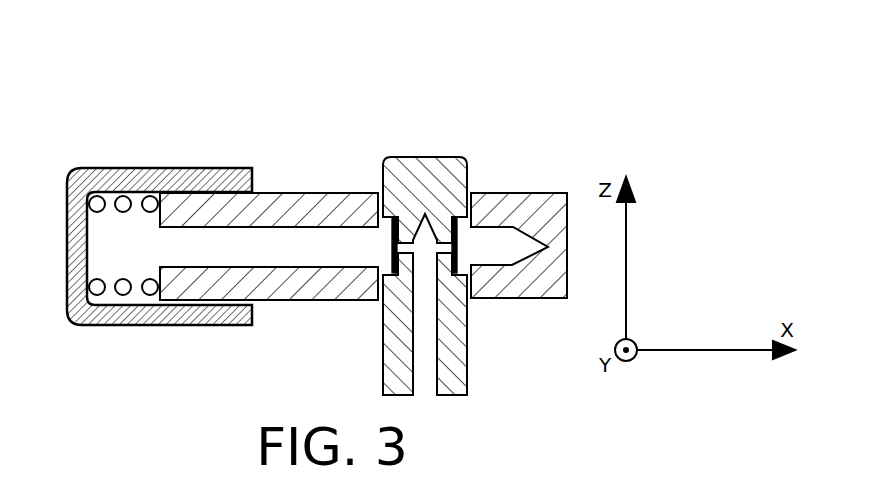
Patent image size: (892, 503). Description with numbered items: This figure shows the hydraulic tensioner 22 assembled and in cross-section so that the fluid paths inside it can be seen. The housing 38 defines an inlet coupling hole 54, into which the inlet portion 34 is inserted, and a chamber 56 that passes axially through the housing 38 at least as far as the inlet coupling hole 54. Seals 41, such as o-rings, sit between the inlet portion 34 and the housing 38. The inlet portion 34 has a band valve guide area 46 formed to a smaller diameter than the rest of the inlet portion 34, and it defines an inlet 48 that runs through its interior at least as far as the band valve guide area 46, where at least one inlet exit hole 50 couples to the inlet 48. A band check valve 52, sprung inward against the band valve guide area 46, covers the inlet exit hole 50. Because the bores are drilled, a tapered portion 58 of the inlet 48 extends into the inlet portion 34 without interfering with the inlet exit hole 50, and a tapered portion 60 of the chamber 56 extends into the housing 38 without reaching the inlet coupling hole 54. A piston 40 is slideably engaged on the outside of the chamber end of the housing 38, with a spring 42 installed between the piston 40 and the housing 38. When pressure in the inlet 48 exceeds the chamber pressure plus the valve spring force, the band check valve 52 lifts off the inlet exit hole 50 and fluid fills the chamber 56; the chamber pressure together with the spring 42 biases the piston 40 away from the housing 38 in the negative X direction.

The hydraulic tensioner 22 is at (522, 108).
The inlet portion 34 is at (468, 372).
The housing 38 is at (278, 193).
The piston 40 is at (99, 168).
The seals 41 is at (391, 220).
The spring 42 is at (124, 300).
The band valve guide area 46 is at (376, 249).
The inlet 48 is at (423, 380).
The inlet exit hole 50 is at (425, 201).
The band check valve 52 is at (377, 222).
The inlet coupling hole 54 is at (430, 100).
The chamber 56 is at (242, 252).
The tapered portion of the inlet hole 58 is at (432, 222).
The tapered portion of the chamber 60 is at (512, 232).